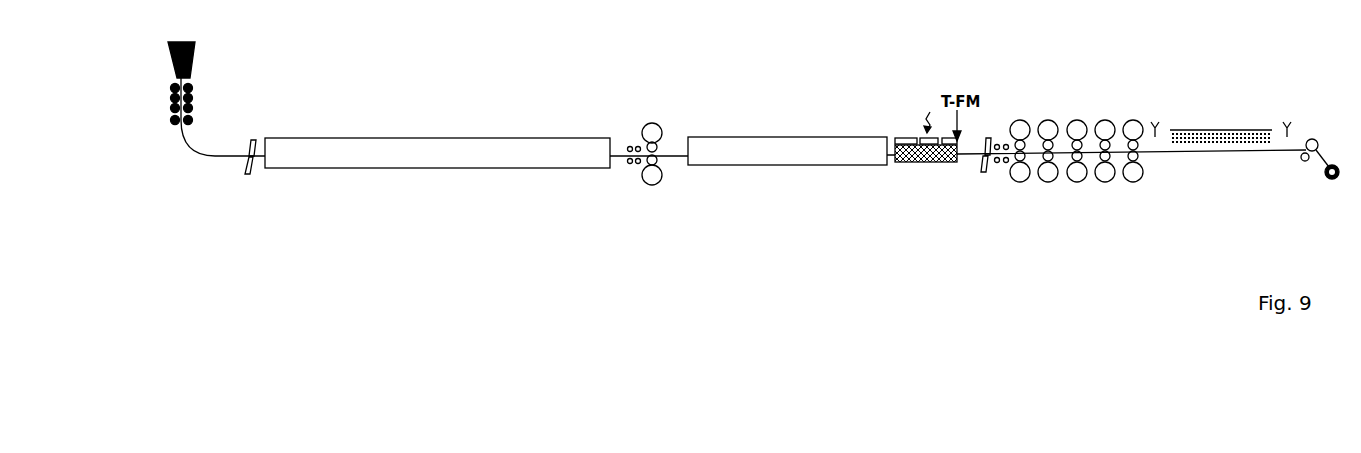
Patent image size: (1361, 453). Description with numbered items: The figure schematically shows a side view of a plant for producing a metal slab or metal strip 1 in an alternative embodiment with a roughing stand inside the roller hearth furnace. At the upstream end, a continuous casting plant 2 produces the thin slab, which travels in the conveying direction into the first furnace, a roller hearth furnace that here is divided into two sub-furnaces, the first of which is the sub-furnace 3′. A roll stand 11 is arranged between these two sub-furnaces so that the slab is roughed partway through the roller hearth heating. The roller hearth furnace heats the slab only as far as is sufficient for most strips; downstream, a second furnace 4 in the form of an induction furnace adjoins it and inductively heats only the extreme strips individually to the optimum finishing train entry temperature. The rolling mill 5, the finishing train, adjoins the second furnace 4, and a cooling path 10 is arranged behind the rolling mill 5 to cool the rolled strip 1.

The metal strip 1 is at (964, 156).
The continuous casting plant 2 is at (160, 70).
The sub-furnace 3′ is at (433, 148).
The second furnace (induction furnace) 4 is at (912, 145).
The rolling mill (finishing train) 5 is at (1058, 101).
The cooling path 10 is at (1211, 118).
The roll stand 11 is at (650, 115).